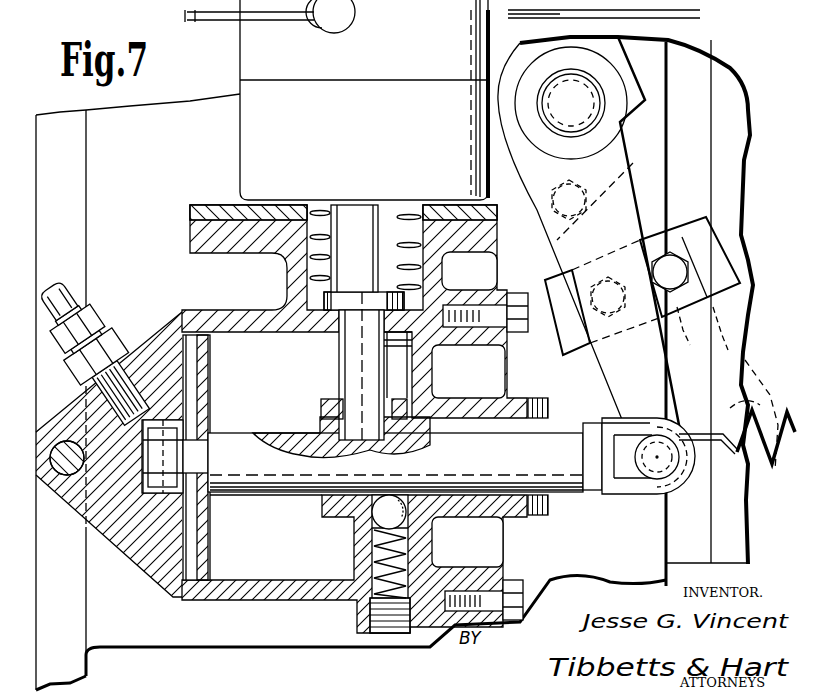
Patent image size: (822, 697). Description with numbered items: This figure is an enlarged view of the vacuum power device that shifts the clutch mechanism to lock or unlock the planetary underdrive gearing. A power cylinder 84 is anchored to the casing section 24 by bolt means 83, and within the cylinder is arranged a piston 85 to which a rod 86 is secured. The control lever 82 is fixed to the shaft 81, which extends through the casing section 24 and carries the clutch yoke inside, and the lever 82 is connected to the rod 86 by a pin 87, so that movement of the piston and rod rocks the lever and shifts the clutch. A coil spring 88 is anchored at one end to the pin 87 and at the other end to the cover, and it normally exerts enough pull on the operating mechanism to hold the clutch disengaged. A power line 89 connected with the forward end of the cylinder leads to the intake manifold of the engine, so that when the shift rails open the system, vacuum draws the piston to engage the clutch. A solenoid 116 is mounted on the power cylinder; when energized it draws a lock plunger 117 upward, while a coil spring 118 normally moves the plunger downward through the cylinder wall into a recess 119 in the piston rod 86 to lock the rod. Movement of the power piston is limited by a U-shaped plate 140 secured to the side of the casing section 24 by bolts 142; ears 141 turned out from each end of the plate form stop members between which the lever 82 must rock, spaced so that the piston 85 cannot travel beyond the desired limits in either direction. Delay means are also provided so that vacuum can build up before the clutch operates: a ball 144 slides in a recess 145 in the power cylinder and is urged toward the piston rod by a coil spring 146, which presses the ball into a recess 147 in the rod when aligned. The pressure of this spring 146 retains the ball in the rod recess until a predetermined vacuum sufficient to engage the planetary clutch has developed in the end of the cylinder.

The casing section 24 is at (192, 104).
The shaft 81 is at (576, 88).
The control lever 82 is at (626, 196).
The bolt means 83 is at (65, 478).
The power cylinder 84 is at (259, 598).
The piston 85 is at (206, 552).
The rod 86 is at (282, 442).
The pin 87 is at (652, 467).
The coil spring 88 is at (775, 468).
The power line 89 is at (78, 304).
The solenoid 116 is at (256, 143).
The lock plunger 117 is at (349, 370).
The coil spring 118 is at (425, 272).
The recess 119 is at (343, 432).
The U-shaped plate 140 is at (678, 237).
The ears 141 is at (570, 320).
The bolts 142 is at (664, 262).
The ball 144 is at (372, 521).
The recess 145 is at (406, 536).
The coil spring 146 is at (371, 557).
The recess 147 is at (296, 494).